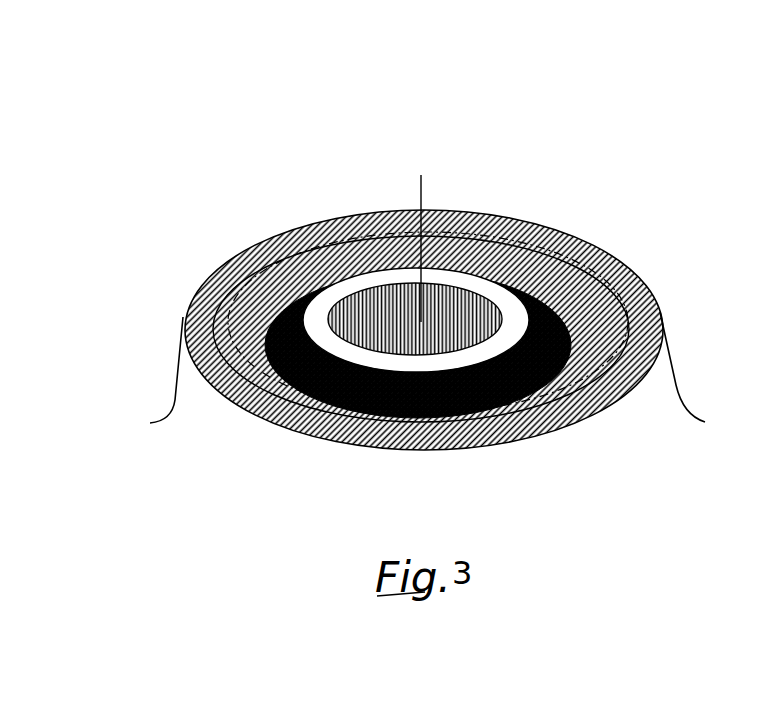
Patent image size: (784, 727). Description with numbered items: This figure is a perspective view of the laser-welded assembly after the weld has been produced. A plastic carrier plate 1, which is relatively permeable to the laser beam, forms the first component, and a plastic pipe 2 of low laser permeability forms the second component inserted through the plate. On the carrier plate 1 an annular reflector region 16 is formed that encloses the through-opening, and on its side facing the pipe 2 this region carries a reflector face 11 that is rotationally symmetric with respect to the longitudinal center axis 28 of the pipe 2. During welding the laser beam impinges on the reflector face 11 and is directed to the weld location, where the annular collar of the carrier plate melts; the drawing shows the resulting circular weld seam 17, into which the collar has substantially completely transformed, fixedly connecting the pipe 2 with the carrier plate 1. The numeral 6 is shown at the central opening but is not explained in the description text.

The carrier plate 1 is at (675, 380).
The pipe 2 is at (527, 330).
The central opening / bore 6 is at (450, 290).
The reflector face 11 is at (262, 308).
The reflector region 16 is at (188, 370).
The weld seam 17 is at (370, 362).
The longitudinal center axis 28 is at (423, 190).